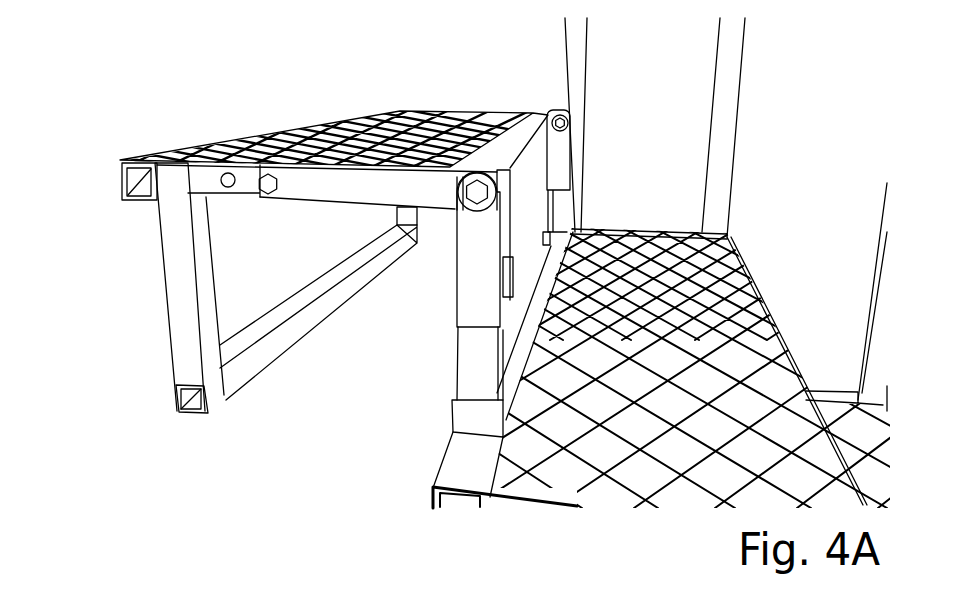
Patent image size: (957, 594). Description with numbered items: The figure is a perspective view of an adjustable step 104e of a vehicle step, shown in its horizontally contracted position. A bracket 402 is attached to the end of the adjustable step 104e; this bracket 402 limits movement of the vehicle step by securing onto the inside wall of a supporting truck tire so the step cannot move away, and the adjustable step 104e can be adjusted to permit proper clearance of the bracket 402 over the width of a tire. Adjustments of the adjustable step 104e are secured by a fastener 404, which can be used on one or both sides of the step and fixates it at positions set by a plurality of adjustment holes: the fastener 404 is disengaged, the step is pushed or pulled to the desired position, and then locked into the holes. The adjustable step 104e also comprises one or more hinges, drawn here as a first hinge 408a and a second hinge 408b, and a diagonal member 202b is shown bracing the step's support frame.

The adjustable step 104e is at (347, 118).
The bracket 402 is at (168, 340).
The fastener 404 is at (263, 176).
The diagonal brace 202b is at (397, 217).
The first hinge 408a is at (487, 188).
The second hinge 408b is at (569, 122).